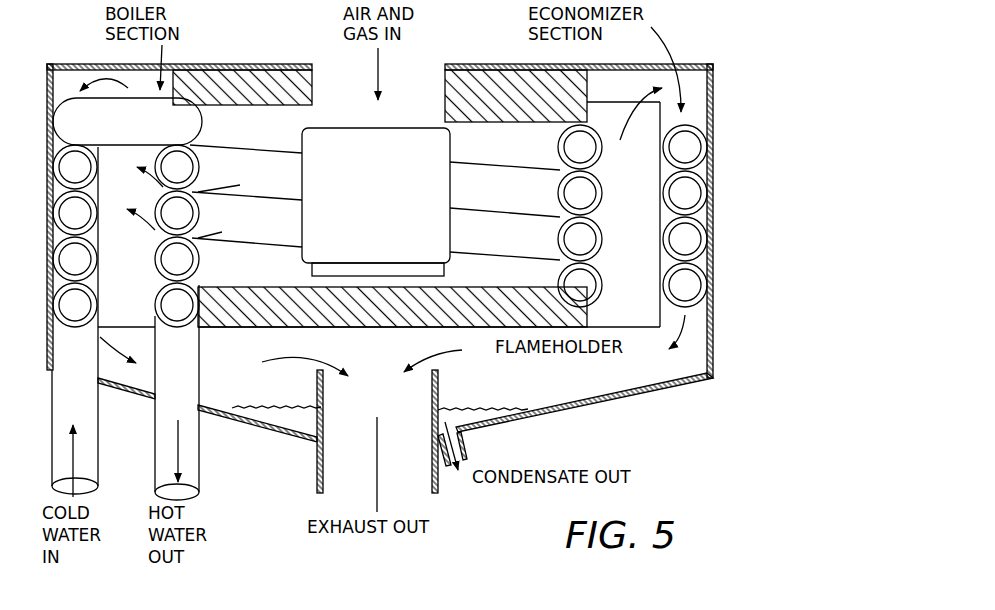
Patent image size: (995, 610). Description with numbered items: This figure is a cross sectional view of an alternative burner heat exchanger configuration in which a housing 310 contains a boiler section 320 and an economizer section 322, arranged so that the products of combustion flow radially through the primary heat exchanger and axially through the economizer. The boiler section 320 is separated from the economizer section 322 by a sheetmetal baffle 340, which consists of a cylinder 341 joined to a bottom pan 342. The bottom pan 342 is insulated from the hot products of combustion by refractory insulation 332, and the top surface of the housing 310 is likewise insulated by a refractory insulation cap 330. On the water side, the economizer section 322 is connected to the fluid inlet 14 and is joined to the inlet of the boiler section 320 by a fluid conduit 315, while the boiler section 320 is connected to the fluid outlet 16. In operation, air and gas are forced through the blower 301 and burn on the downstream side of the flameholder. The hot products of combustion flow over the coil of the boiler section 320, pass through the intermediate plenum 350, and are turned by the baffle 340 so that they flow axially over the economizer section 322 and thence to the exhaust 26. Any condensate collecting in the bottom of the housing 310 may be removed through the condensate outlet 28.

The fluid inlet 14 is at (98, 448).
The fluid outlet 16 is at (200, 470).
The exhaust 26 is at (317, 457).
The condensate outlet 28 is at (470, 448).
The blower 301 is at (448, 176).
The housing 310 is at (715, 112).
The fluid conduit 315 is at (113, 147).
The boiler section 320 is at (557, 227).
The economizer section 322 is at (708, 256).
The refractory insulation cap 330 is at (496, 122).
The refractory insulation 332 is at (270, 300).
The sheetmetal baffle 340 is at (350, 327).
The cylinder 341 is at (660, 250).
The bottom pan 342 is at (598, 327).
The intermediate plenum 350 is at (637, 133).